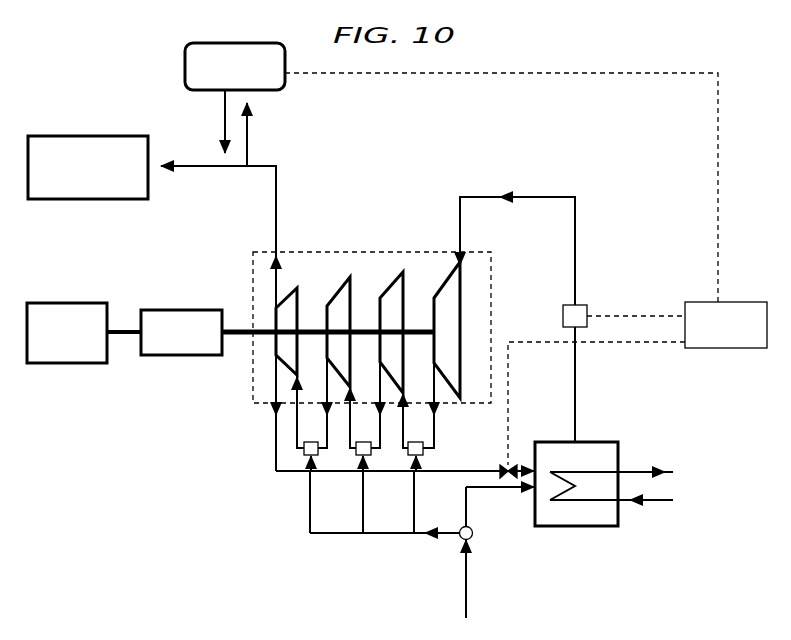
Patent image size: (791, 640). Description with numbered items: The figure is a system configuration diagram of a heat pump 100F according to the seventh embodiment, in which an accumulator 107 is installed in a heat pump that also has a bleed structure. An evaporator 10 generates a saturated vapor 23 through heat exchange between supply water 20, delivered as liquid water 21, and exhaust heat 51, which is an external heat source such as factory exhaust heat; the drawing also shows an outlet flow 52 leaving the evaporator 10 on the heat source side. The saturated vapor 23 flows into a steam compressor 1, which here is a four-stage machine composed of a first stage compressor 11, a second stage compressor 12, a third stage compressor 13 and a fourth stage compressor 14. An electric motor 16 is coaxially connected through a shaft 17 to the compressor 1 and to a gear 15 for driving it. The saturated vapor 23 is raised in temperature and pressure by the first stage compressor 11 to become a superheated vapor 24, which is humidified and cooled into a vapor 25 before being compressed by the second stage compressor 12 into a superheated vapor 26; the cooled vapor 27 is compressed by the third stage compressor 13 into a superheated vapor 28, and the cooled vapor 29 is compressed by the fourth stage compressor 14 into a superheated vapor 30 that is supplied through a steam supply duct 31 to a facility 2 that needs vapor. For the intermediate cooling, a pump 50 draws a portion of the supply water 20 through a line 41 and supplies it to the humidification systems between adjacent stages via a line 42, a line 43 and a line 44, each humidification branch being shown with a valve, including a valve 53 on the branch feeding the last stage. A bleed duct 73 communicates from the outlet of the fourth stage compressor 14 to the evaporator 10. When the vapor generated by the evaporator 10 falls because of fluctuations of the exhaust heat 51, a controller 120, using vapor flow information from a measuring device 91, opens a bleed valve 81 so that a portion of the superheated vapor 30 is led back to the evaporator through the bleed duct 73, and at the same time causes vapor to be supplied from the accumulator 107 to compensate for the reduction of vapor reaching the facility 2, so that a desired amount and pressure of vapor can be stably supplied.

The steam compressor 1 is at (510, 336).
The facility 2 is at (88, 135).
The evaporator 10 is at (582, 528).
The first stage compressor 11 is at (447, 280).
The second stage compressor 12 is at (397, 290).
The third stage compressor 13 is at (337, 300).
The fourth stage compressor 14 is at (290, 300).
The gear 15 is at (176, 357).
The electric motor 16 is at (49, 365).
The shaft 17 is at (241, 330).
The supply water 20 is at (454, 579).
The liquid water 21 is at (500, 507).
The saturated vapor 23 is at (517, 319).
The superheated vapor 24 is at (419, 393).
The steam injection pipe 25 is at (390, 373).
The superheated vapor 26 is at (366, 391).
The vapor 27 is at (338, 377).
The superheated vapor 28 is at (313, 385).
The vapor 29 is at (290, 318).
The superheated vapor 30 is at (219, 155).
The steam supply duct 31 is at (203, 168).
The branch pipe 41 is at (439, 520).
The line 42 is at (392, 502).
The line 43 is at (339, 502).
The line 44 is at (301, 502).
The pump 50 is at (473, 540).
The exhaust heat 51 is at (405, 458).
The control valve / heat medium outlet 52 is at (352, 458).
The control valve 53 is at (304, 449).
The bleed duct 73 is at (278, 473).
The bleed valve 81 is at (500, 468).
The measuring device 91 is at (584, 310).
The power generation system 100F is at (381, 601).
The accumulator 107 is at (283, 91).
The controller 120 is at (731, 350).